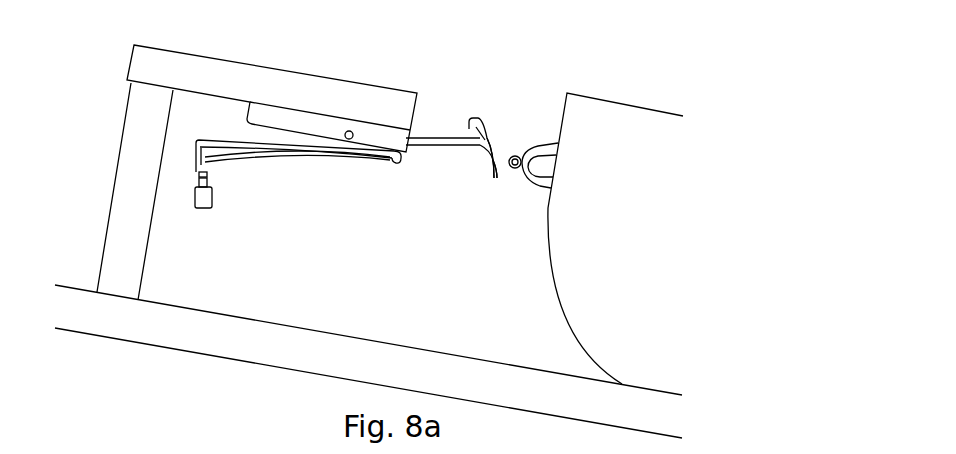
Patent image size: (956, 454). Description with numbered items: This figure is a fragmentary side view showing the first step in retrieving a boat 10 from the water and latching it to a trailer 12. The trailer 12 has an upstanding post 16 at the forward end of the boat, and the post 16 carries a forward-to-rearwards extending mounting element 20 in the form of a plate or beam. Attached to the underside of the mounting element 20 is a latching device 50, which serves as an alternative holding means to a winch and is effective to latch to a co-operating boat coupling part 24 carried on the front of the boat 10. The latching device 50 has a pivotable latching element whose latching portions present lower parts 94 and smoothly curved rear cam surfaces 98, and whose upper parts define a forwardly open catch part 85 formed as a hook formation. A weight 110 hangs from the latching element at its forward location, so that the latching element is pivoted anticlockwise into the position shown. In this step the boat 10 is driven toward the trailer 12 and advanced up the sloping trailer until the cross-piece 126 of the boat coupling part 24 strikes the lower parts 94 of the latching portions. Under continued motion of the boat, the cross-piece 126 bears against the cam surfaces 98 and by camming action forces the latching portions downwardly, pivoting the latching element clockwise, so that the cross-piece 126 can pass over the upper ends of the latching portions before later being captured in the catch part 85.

The boat 10 is at (629, 104).
The trailer 12 is at (152, 325).
The upstanding post 16 is at (132, 193).
The mounting element 20 is at (205, 70).
The boat coupling part 24 is at (538, 143).
The latching device 50 is at (357, 182).
The catch part 85 is at (468, 117).
The lower part of latching portion 94 is at (492, 167).
The cam surface 98 is at (496, 155).
The weight 110 is at (212, 200).
The cross-piece 126 is at (513, 168).